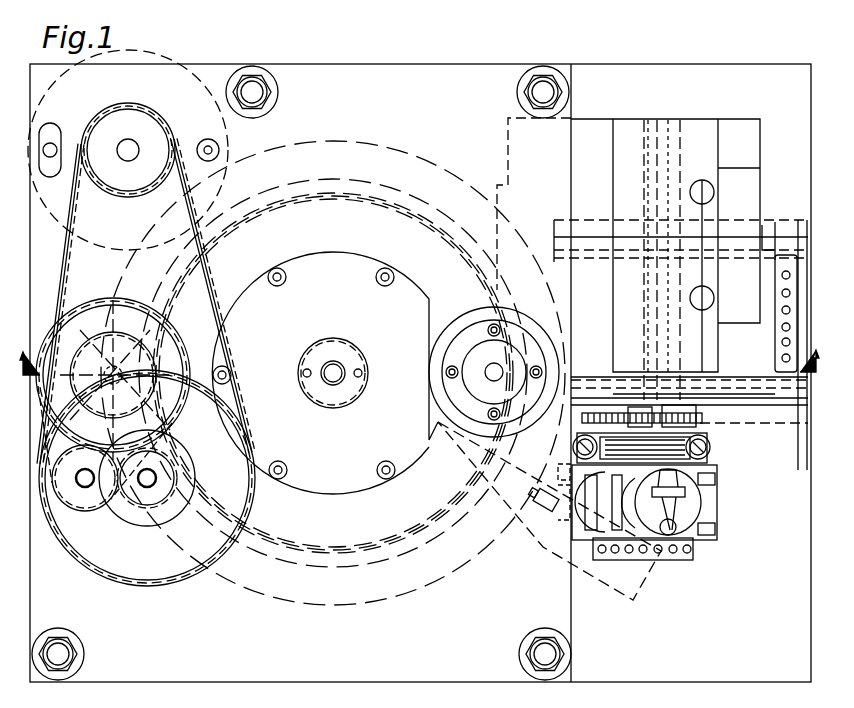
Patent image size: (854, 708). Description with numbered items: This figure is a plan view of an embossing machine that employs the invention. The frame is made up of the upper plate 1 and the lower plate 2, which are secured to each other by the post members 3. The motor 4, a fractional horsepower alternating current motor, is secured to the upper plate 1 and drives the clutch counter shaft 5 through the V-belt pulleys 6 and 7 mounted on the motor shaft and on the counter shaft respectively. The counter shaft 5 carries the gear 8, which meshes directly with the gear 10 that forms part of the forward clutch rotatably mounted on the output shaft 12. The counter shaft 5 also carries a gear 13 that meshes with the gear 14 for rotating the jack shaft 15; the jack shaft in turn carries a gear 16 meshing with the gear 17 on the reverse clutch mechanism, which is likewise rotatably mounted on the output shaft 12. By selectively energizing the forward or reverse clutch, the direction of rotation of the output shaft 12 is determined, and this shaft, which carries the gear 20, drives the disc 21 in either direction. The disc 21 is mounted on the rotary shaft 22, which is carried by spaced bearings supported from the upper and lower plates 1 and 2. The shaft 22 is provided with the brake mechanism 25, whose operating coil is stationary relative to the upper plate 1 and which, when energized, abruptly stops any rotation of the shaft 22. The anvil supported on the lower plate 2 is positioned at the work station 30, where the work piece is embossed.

The upper plate 1 is at (362, 72).
The lower plate 2 is at (418, 351).
The post members 3 is at (255, 88).
The motor 4 is at (138, 54).
The clutch counter shaft 5 is at (147, 490).
The V-belt pulley 6 is at (146, 132).
The V-belt pulley 7 is at (244, 456).
The gear 8 is at (178, 470).
The gear 10 is at (214, 376).
The output shaft 12 is at (110, 372).
The gear 13 is at (160, 498).
The gear 14 is at (106, 512).
The jack shaft 15 is at (84, 490).
The gear 16 is at (68, 445).
The gear 17 is at (100, 300).
The gear 20 is at (170, 332).
The disc 21 is at (340, 192).
The rotary shaft 22 is at (334, 360).
The brake mechanism 25 is at (340, 264).
The work station 30 is at (490, 364).